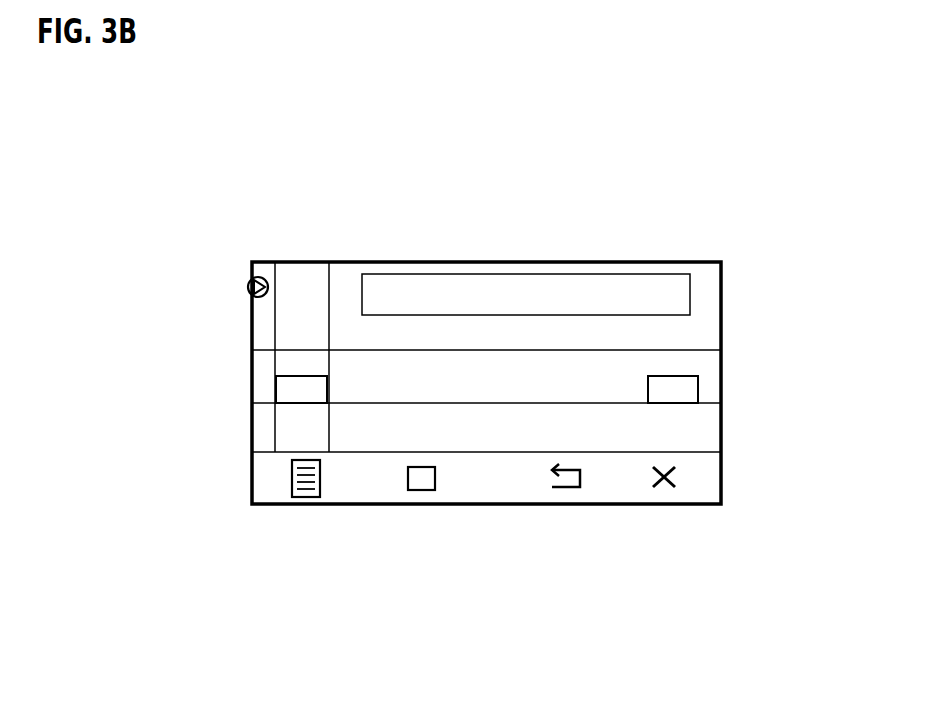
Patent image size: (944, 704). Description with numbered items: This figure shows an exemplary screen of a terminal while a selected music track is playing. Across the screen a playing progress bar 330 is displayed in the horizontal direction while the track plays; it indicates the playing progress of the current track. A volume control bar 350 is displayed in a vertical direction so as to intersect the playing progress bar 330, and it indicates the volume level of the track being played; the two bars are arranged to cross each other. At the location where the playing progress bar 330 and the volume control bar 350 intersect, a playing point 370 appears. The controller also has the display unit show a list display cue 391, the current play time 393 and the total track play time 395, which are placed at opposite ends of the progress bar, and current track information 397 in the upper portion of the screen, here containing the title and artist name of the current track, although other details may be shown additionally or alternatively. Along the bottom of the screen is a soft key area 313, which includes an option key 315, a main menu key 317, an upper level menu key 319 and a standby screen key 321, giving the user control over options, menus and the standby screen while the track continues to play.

The soft key area 313 is at (713, 480).
The option key 315 is at (304, 497).
The main menu key 317 is at (417, 491).
The upper level menu key 319 is at (563, 489).
The standby screen key 321 is at (665, 489).
The playing progress bar 330 is at (712, 357).
The volume control bar 350 is at (283, 428).
The playing point 370 is at (283, 357).
The list display cue 391 is at (248, 289).
The current play time 393 is at (276, 391).
The total track play time 395 is at (700, 388).
The current track information 397 is at (524, 274).